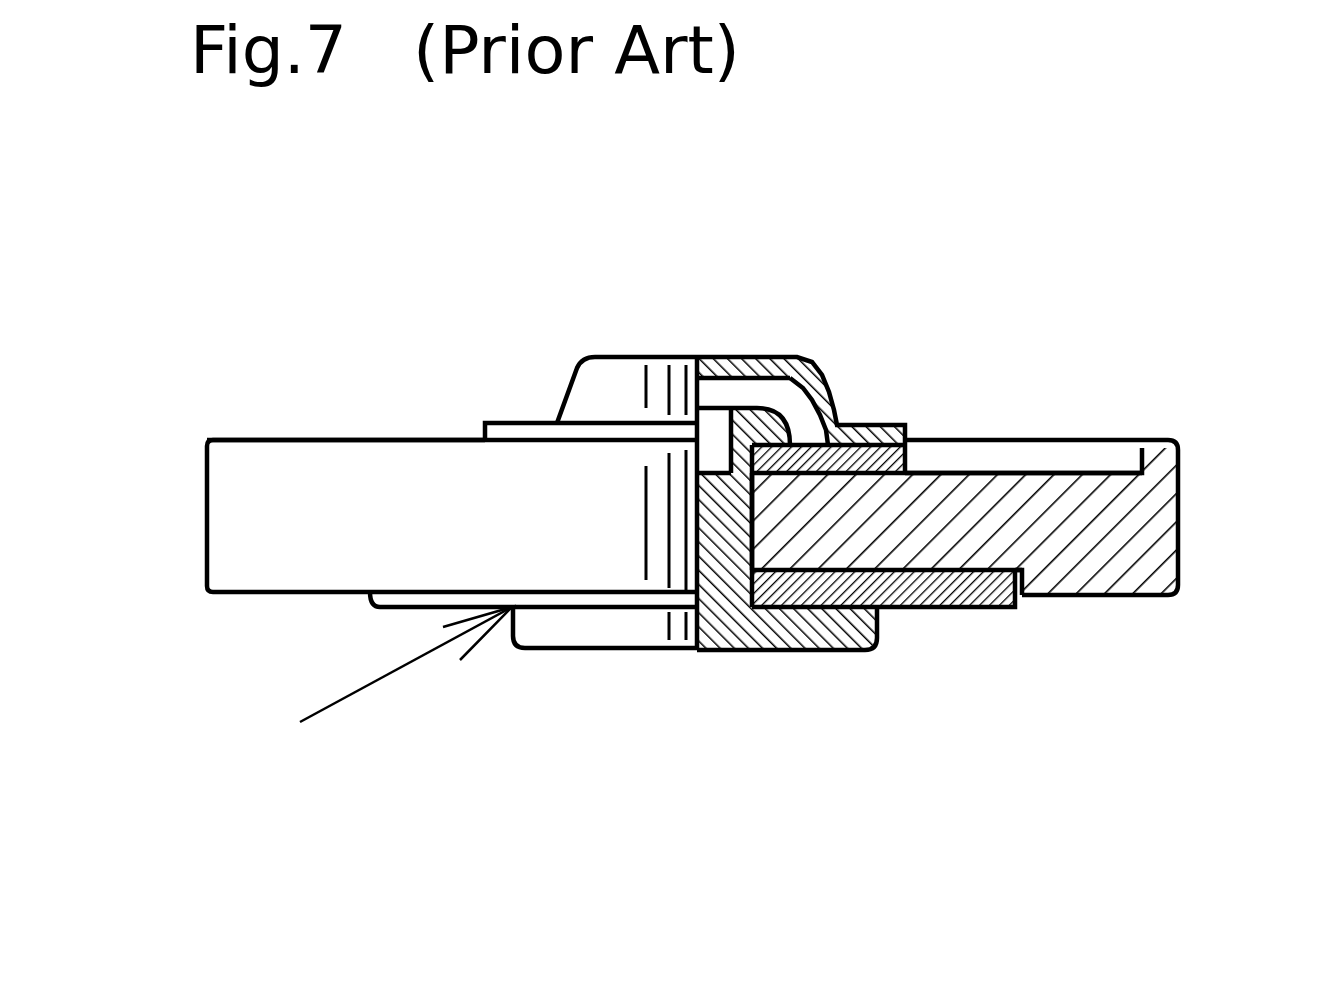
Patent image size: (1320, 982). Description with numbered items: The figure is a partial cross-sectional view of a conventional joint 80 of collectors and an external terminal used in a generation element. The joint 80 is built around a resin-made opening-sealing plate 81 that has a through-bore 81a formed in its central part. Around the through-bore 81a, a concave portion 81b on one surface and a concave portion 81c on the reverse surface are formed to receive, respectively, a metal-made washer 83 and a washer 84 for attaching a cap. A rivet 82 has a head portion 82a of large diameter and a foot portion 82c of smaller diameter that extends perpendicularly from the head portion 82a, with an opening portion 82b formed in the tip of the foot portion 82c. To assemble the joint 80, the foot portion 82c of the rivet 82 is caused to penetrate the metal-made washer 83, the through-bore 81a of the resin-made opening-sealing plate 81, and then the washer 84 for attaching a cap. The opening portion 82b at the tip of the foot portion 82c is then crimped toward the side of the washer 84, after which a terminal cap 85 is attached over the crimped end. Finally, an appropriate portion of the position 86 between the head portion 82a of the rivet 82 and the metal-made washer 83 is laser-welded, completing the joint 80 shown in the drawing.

The joint 80 is at (300, 285).
The resin-made opening-sealing plate 81 is at (1157, 523).
The through-bore 81a is at (757, 545).
The concave portion 81b is at (1020, 592).
The concave portion 81c is at (1103, 465).
The rivet 82 is at (720, 558).
The head portion of the rivet 82a is at (752, 582).
The opening portion 82b is at (713, 420).
The foot portion of the rivet 82c is at (775, 420).
The metal-made washer 83 is at (970, 587).
The washer for attaching a cap 84 is at (905, 447).
The terminal cap 85 is at (663, 355).
The position 86 is at (377, 694).